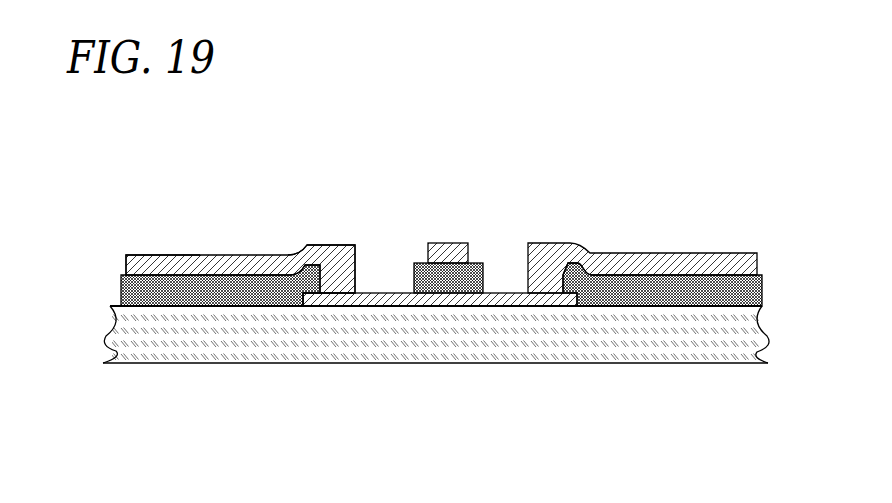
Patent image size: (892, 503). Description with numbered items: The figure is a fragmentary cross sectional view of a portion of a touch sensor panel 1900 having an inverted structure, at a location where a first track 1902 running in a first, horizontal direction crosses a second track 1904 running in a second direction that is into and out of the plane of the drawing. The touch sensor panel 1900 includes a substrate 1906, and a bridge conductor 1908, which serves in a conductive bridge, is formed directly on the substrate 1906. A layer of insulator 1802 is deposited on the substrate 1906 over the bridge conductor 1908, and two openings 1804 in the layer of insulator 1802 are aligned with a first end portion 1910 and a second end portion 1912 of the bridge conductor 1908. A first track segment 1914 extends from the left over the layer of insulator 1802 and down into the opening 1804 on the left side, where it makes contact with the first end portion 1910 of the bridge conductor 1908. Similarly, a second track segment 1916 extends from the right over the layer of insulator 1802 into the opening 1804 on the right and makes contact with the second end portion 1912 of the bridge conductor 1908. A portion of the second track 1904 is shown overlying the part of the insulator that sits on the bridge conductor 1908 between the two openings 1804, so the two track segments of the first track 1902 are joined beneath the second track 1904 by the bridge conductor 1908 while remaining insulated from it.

The touch sensor panel 1900 is at (497, 134).
The layer of insulator 1802 is at (121, 278).
The openings 1804 is at (373, 292).
The first track 1902 is at (143, 253).
The second track 1904 is at (443, 243).
The substrate 1906 is at (128, 343).
The bridge conductor 1908 is at (353, 247).
The first end portion 1910 is at (307, 297).
The second end portion 1912 is at (550, 306).
The first track segment 1914 is at (133, 253).
The second track segment 1916 is at (642, 255).